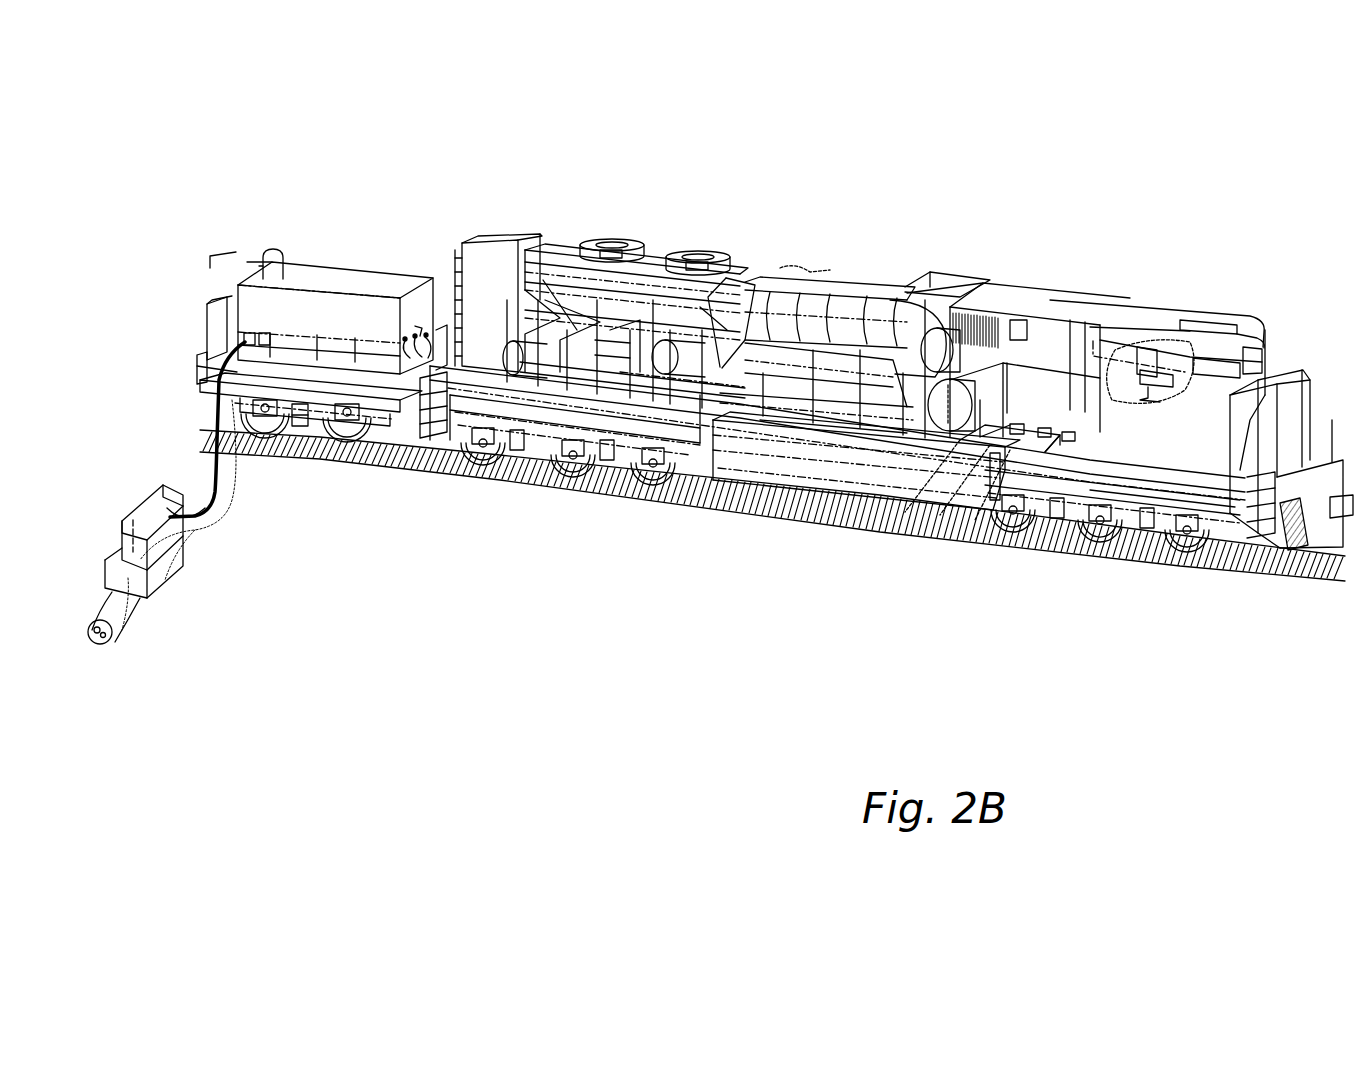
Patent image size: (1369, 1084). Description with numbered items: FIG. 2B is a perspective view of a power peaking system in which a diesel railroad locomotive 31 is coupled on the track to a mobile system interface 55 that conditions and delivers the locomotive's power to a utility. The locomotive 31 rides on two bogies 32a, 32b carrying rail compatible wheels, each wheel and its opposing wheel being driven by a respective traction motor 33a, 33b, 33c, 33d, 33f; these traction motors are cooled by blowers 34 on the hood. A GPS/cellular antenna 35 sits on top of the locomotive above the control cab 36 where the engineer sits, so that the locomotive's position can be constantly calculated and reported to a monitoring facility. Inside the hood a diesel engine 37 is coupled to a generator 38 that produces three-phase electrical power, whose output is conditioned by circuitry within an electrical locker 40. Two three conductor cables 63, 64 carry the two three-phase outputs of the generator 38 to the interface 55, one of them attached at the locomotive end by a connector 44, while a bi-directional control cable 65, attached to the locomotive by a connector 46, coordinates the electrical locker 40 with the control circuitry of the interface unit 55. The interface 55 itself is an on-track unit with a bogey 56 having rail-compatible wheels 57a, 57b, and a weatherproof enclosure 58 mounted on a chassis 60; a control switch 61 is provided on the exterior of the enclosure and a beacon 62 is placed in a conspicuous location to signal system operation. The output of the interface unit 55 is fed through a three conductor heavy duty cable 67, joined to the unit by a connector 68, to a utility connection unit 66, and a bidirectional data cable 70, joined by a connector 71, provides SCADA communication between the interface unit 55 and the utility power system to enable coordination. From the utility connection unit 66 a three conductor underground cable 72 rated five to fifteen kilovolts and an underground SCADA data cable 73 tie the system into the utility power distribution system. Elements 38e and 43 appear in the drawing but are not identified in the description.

The diesel railroad locomotive 31 is at (482, 236).
The bogie 32a is at (530, 477).
The bogie 32b is at (1140, 562).
The traction motor 33a is at (483, 470).
The traction motor 33b is at (575, 480).
The traction motor 33c is at (647, 487).
The traction motor 33d is at (1013, 547).
The traction motor 33f is at (1185, 567).
The blower 34 is at (527, 300).
The GPS/cellular antenna 35 is at (1205, 312).
The control cab 36 is at (1265, 352).
The diesel engine 37 is at (858, 348).
The generator 38 is at (875, 530).
The wheel 38e is at (1088, 553).
The electrical locker 40 is at (1060, 335).
The control console 43 is at (985, 450).
The connector 44 is at (1095, 418).
The connector 46 is at (1072, 438).
The mobile system interface 55 is at (268, 270).
The bogey 56 is at (278, 452).
The rail-compatible wheel 57a is at (240, 452).
The rail-compatible wheel 57b is at (350, 448).
The weatherproof enclosure 58 is at (378, 282).
The chassis 60 is at (210, 368).
The control switch 61 is at (420, 318).
The beacon 62 is at (277, 252).
The three conductor cable 63 is at (925, 507).
The three conductor cable 64 is at (965, 507).
The bi-directional control cable 65 is at (985, 517).
The utility connection unit 66 is at (148, 496).
The three conductor heavy duty cable 67 is at (222, 472).
The connector 68 is at (228, 322).
The bidirectional data cable 70 is at (208, 528).
The connector 71 is at (262, 340).
The underground cable 72 is at (120, 598).
The underground SCADA data cable 73 is at (140, 620).